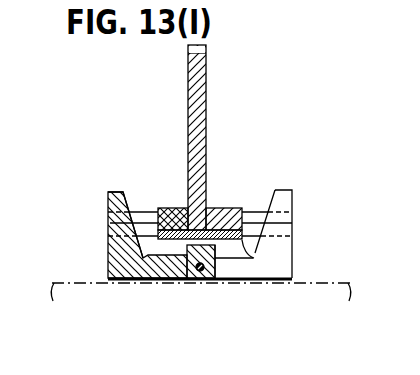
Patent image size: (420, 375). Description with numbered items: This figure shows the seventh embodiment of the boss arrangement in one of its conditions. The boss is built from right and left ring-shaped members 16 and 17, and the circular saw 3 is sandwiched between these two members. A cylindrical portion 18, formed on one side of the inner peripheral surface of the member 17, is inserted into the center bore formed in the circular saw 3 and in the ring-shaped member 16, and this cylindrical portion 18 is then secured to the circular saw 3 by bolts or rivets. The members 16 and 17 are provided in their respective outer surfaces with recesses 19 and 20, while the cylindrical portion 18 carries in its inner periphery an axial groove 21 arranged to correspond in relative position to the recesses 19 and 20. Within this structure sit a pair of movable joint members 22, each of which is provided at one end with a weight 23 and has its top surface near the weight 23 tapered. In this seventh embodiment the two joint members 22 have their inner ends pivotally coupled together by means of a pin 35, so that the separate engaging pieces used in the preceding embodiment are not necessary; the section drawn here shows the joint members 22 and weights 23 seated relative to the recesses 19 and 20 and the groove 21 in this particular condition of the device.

The circular saw 3 is at (190, 116).
The ring-shaped member 16 is at (173, 207).
The ring-shaped member 17 is at (230, 208).
The cylindrical portion 18 is at (117, 267).
The recess 19 is at (110, 223).
The recess 20 is at (292, 222).
The axial groove 21 is at (252, 253).
The movable joint member 22 is at (160, 277).
The weight 23 is at (118, 192).
The pin 35 is at (202, 271).